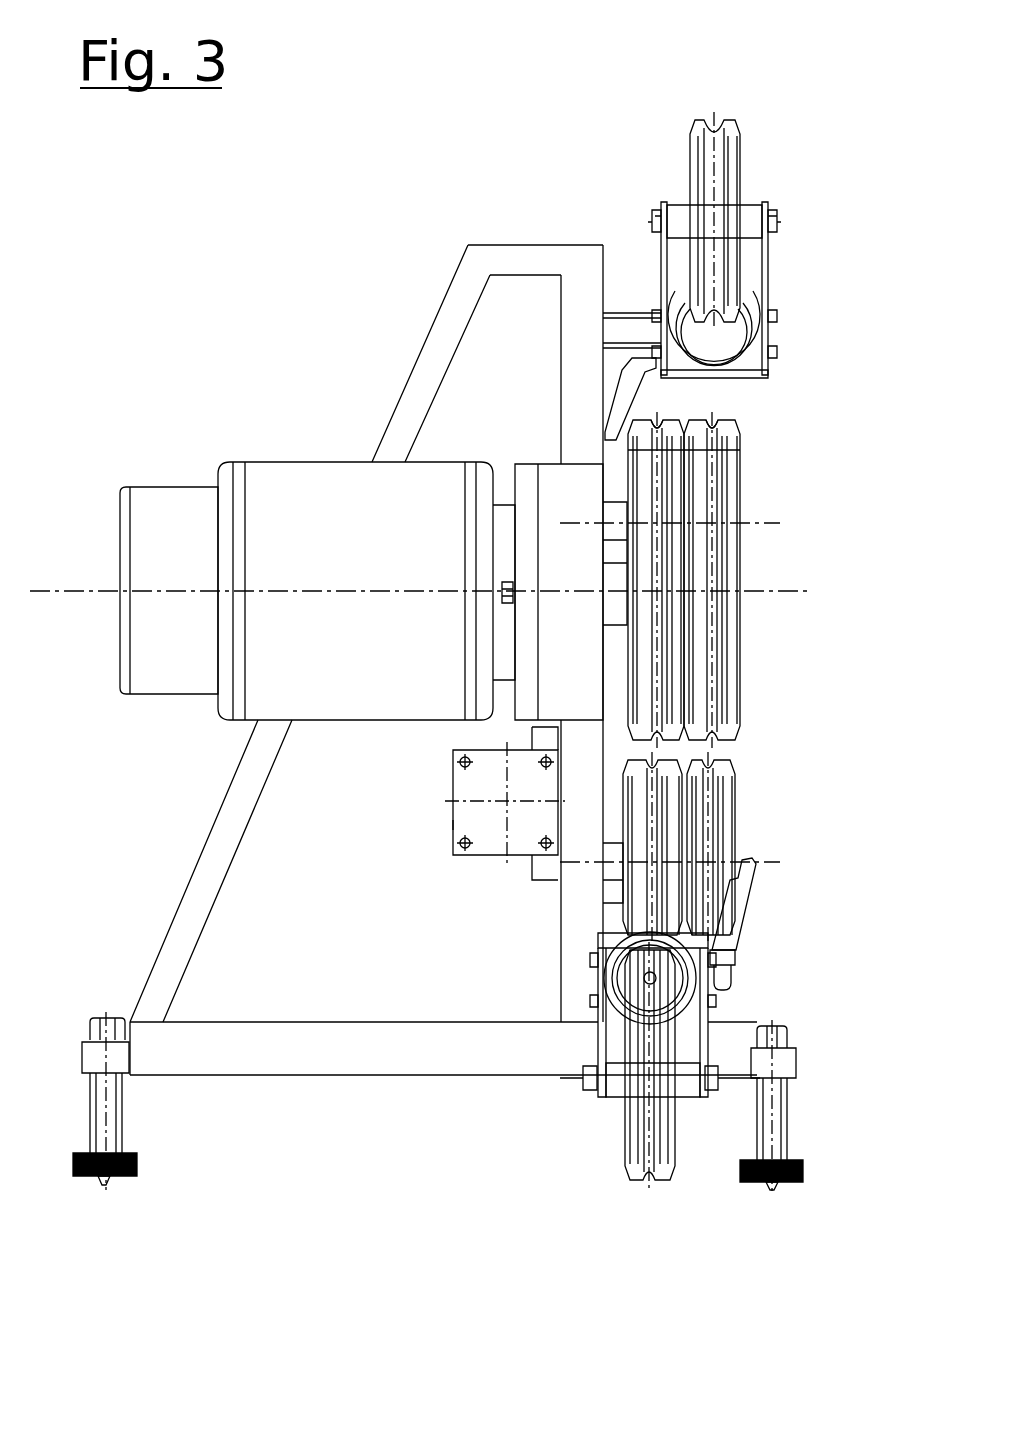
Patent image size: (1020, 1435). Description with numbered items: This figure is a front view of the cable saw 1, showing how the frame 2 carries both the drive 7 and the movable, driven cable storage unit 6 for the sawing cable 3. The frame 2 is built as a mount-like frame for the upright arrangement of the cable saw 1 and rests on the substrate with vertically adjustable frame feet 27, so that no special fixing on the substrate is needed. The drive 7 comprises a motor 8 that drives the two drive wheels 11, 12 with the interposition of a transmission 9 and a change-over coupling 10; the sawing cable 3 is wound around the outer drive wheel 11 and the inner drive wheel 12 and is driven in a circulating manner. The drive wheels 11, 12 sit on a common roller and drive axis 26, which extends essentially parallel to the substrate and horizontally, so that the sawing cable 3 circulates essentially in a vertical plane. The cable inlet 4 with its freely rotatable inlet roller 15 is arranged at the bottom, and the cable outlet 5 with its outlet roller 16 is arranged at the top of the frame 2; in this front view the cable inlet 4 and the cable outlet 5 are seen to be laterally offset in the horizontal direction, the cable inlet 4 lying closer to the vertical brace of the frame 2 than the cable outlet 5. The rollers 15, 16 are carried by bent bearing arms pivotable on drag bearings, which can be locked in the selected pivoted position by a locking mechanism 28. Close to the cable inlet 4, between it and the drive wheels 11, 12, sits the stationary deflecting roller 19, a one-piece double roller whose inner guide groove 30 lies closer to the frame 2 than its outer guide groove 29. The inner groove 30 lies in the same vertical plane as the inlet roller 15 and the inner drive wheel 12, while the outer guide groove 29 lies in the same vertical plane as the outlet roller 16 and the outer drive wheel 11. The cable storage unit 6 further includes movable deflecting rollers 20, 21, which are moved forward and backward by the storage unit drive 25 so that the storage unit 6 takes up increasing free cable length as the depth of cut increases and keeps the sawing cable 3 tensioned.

The cable saw 1 is at (525, 217).
The frame 2 is at (277, 1045).
The sawing cable 3 is at (644, 978).
The cable inlet 4 is at (607, 1113).
The inlet roller 15 is at (633, 1110).
The cable outlet 5 is at (737, 225).
The outlet roller 16 is at (748, 148).
The cable storage unit 6 is at (470, 873).
The drive 7 is at (315, 412).
The motor 8 is at (177, 530).
The transmission 9 is at (557, 495).
The change-over coupling 10 is at (507, 525).
The outer drive wheel 11 is at (722, 628).
The inner drive wheel 12 is at (663, 650).
The stationary deflecting roller 19 is at (723, 843).
The deflecting roller 20 is at (733, 977).
The deflecting roller 21 is at (727, 442).
The storage unit drive 25 is at (463, 818).
The roller and drive axis 26 is at (765, 592).
The frame feet 27 is at (98, 1118).
The locking mechanism 28 is at (737, 938).
The outer guide groove 29 is at (733, 425).
The inner guide groove 30 is at (667, 410).